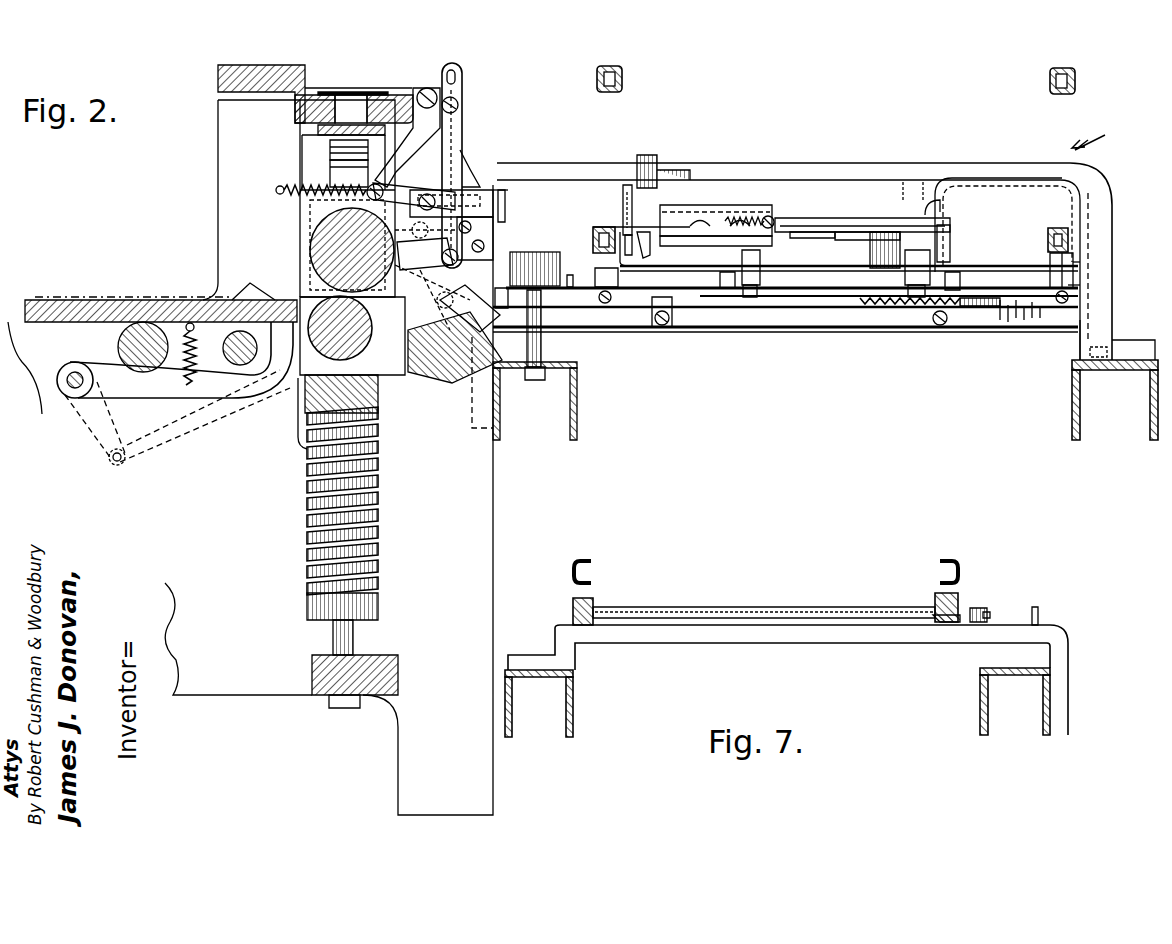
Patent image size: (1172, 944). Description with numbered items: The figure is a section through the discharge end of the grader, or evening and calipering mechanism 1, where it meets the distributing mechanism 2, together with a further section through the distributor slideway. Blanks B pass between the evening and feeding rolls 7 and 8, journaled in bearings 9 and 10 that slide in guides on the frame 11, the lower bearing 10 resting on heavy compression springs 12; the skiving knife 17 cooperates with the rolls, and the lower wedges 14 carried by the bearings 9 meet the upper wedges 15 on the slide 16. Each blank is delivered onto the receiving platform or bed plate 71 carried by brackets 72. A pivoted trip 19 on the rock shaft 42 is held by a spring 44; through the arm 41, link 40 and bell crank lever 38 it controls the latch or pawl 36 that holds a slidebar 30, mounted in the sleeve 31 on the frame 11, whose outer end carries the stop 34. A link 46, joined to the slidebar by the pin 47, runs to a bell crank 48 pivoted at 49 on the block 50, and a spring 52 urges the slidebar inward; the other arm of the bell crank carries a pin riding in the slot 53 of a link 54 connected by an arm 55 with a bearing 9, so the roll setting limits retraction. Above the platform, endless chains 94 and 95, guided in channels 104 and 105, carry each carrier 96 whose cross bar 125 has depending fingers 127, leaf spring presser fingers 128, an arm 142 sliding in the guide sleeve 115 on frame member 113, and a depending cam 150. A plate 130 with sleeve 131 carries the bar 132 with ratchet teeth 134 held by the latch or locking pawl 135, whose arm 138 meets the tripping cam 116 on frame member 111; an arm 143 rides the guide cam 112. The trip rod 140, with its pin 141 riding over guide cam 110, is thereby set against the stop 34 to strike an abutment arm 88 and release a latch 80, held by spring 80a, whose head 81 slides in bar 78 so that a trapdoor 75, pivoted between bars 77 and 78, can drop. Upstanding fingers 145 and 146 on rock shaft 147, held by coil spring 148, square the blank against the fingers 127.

In FIG. 2, the evening and calipering mechanism 1 is at (183, 188).
In FIG. 2, the distributing mechanism 2 is at (1096, 136).
In FIG. 2, the upper evening and feeding roll 7 is at (330, 222).
In FIG. 2, the lower evening and feeding roll 8 is at (378, 340).
In FIG. 2, the upper bearing 9 is at (300, 222).
In FIG. 2, the lower bearing 10 is at (378, 392).
In FIG. 2, the frame 11 is at (480, 472).
In FIG. 2, the compression spring 12 is at (380, 532).
In FIG. 2, the lower wedge 14 is at (340, 176).
In FIG. 2, the upper wedge 15 is at (338, 150).
In FIG. 2, the slide 16 is at (350, 125).
In FIG. 2, the skiving knife 17 is at (435, 382).
In FIG. 2, the pivoted trip 19 is at (240, 295).
In FIG. 2, the slidebar 30 is at (508, 198).
In FIG. 2, the sleeve 31 is at (496, 192).
In FIG. 2, the stop 34 is at (505, 212).
In FIG. 2, the latch or pawl 36 is at (492, 230).
In FIG. 2, the bell crank lever 38 is at (450, 273).
In FIG. 2, the link 40 is at (205, 425).
In FIG. 2, the arm 41 is at (118, 420).
In FIG. 2, the rock shaft 42 is at (74, 372).
In FIG. 2, the spring 44 is at (198, 358).
In FIG. 2, the link 46 is at (390, 190).
In FIG. 2, the pin 47 is at (430, 195).
In FIG. 2, the bell crank 48 is at (447, 128).
In FIG. 2, the pivot 49 is at (432, 86).
In FIG. 2, the block 50 is at (470, 82).
In FIG. 2, the spring 52 is at (282, 185).
In FIG. 2, the slot 53 is at (460, 105).
In FIG. 2, the link 54 is at (462, 150).
In FIG. 2, the arm 55 is at (438, 252).
In FIG. 2, the receiving platform or bed plate 71 is at (1065, 305).
In FIG. 7, the bracket 72 is at (1070, 640).
In FIG. 7, the trapdoor or tilting gate 75 is at (820, 618).
In FIG. 2, the upstanding bar 77 is at (1063, 281).
In FIG. 7, the upstanding bar 77 is at (573, 610).
In FIG. 2, the upstanding bar 78 is at (628, 295).
In FIG. 7, the upstanding bar 78 is at (958, 598).
In FIG. 7, the latch 80 is at (950, 620).
In FIG. 7, the spring 80a is at (990, 605).
In FIG. 7, the head 81 is at (990, 615).
In FIG. 2, the latch releasing member or abutment arm 88 is at (515, 268).
In FIG. 2, the endless chain 94 is at (622, 78).
In FIG. 2, the endless chain 95 is at (1050, 80).
In FIG. 2, the carrier 96 is at (832, 292).
In FIG. 2, the channel 104 is at (590, 232).
In FIG. 7, the channel 104 is at (585, 558).
In FIG. 2, the channel 105 is at (1055, 232).
In FIG. 7, the channel 105 is at (945, 558).
In FIG. 2, the guide cam 110 is at (648, 155).
In FIG. 2, the frame member 111 is at (790, 166).
In FIG. 2, the guide cam 112 is at (600, 268).
In FIG. 2, the frame member 113 is at (1005, 190).
In FIG. 2, the guide sleeve 115 is at (950, 250).
In FIG. 2, the tripping cam 116 is at (855, 240).
In FIG. 2, the cross bar 125 is at (890, 272).
In FIG. 2, the downwardly extending finger 127 is at (950, 280).
In FIG. 2, the leaf spring presser finger 128 is at (885, 350).
In FIG. 2, the plate 130 is at (745, 240).
In FIG. 2, the sleeve 131 is at (730, 205).
In FIG. 2, the bar 132 is at (860, 182).
In FIG. 2, the ratchet teeth 134 is at (828, 218).
In FIG. 2, the latch or locking pawl 135 is at (770, 215).
In FIG. 2, the arm 138 is at (800, 238).
In FIG. 2, the trip rod 140 is at (623, 185).
In FIG. 2, the arm or pin 141 is at (660, 180).
In FIG. 2, the arm 142 is at (950, 235).
In FIG. 2, the arm 143 is at (648, 248).
In FIG. 2, the upstanding finger 145 is at (725, 292).
In FIG. 2, the upstanding finger 146 is at (960, 280).
In FIG. 2, the rock shaft 147 is at (858, 305).
In FIG. 2, the coil spring 148 is at (935, 312).
In FIG. 2, the depending cam 150 is at (1045, 272).
In FIG. 2, the blank B is at (62, 298).